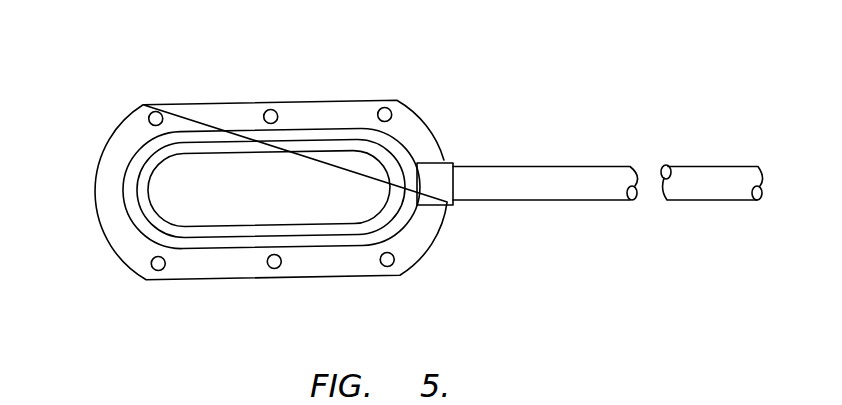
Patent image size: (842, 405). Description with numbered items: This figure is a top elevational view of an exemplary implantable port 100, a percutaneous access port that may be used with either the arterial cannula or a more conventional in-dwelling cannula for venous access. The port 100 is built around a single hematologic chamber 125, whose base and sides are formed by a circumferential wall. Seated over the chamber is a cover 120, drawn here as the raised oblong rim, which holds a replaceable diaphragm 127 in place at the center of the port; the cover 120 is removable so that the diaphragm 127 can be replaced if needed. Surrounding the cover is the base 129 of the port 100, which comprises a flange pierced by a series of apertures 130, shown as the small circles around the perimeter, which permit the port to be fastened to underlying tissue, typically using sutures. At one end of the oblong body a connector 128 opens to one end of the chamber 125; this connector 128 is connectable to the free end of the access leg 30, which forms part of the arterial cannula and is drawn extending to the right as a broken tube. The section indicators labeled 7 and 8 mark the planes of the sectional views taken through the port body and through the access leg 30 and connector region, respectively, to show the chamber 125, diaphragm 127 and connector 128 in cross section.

The implantable port 100 is at (268, 178).
The cover 120 is at (408, 230).
The hematologic chamber 125 is at (218, 206).
The replaceable diaphragm 127 is at (298, 198).
The connector 128 is at (447, 162).
The base 129 is at (108, 228).
The apertures 130 is at (156, 110).
The access leg 30 is at (588, 166).
The section line 7- 7 is at (340, 88).
The section line 8- 8 is at (115, 195).